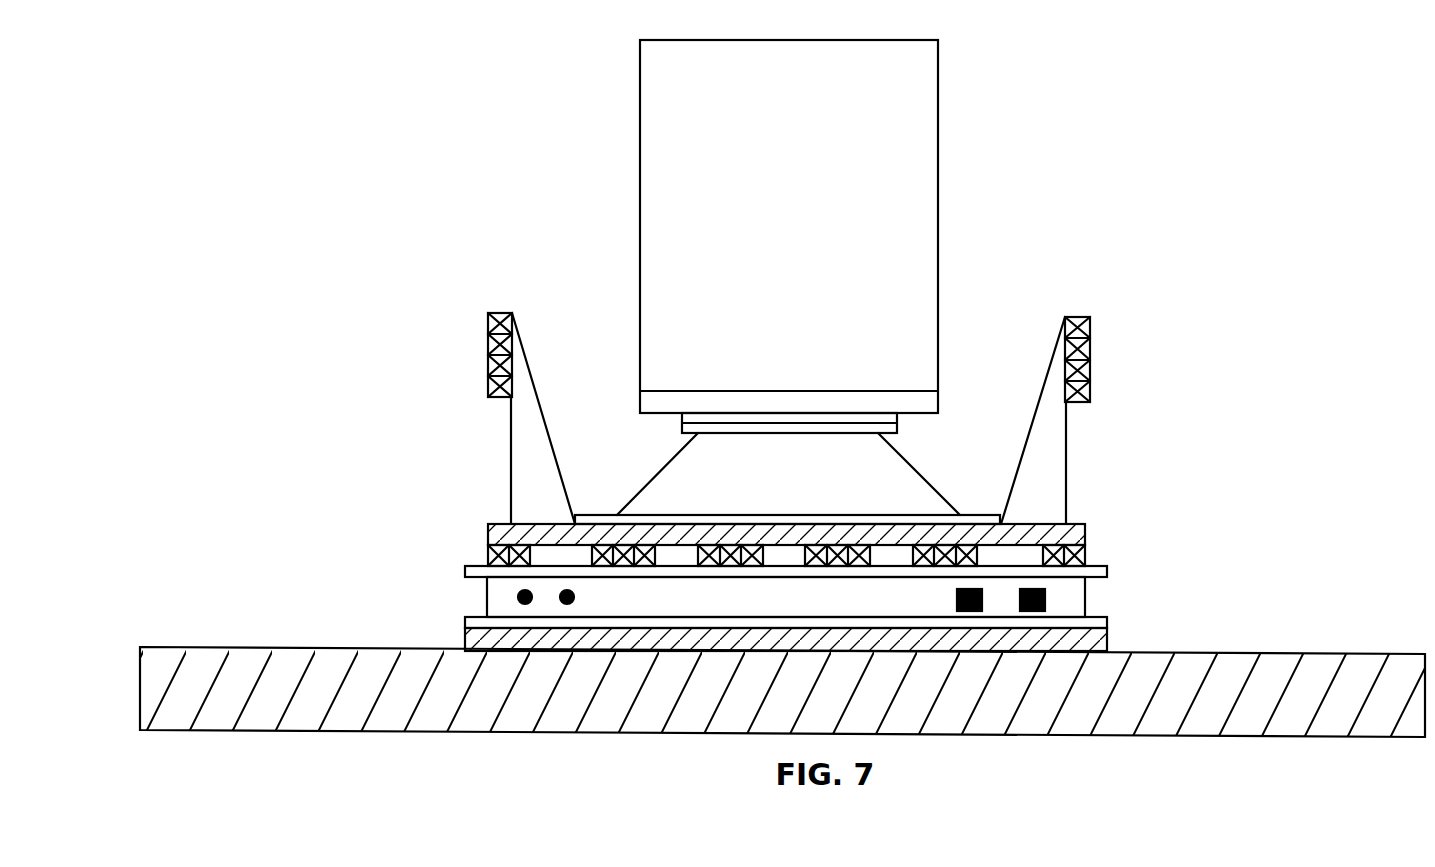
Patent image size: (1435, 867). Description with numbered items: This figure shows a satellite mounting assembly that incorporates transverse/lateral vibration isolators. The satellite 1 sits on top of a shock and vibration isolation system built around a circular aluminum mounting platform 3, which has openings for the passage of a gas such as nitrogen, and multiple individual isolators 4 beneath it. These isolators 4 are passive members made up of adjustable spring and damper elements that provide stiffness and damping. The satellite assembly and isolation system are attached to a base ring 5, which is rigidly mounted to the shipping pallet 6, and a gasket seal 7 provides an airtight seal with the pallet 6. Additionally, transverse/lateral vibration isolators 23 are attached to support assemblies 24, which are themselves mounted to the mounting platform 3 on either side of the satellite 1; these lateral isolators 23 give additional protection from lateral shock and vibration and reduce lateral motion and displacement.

The satellite 1 is at (636, 128).
The transverse/lateral vibration isolators 23 is at (487, 318).
The support assemblies 24 is at (503, 460).
The mounting platform 3 is at (484, 533).
The isolators 4 is at (1098, 557).
The base ring 5 is at (1100, 601).
The shipping pallet 6 is at (262, 645).
The gasket seal 7 is at (1118, 640).